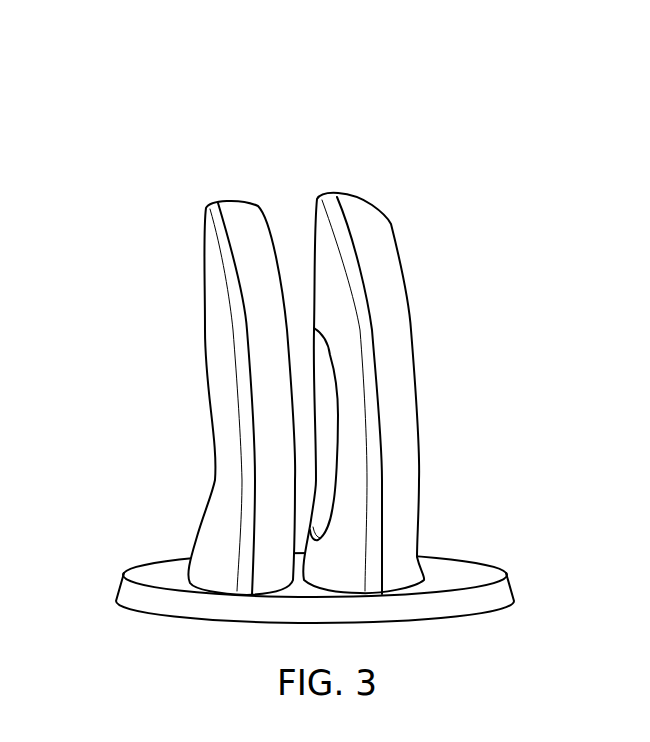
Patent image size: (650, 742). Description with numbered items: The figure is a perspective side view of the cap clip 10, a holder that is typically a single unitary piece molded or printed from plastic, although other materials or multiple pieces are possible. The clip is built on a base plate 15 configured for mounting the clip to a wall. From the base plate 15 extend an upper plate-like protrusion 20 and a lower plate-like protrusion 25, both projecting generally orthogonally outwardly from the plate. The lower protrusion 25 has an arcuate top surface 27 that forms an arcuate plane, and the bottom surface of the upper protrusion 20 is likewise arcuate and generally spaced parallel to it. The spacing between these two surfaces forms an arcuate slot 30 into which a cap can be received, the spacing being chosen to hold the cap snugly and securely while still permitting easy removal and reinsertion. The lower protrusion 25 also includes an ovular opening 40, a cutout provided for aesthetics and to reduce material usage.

The cap clip 10 is at (190, 156).
The base plate 15 is at (117, 585).
The upper plate-like protrusion 20 is at (222, 458).
The lower plate-like protrusion 25 is at (418, 367).
The arcuate top surface 27 is at (323, 233).
The arcuate slot 30 is at (283, 190).
The ovular opening 40 is at (327, 357).